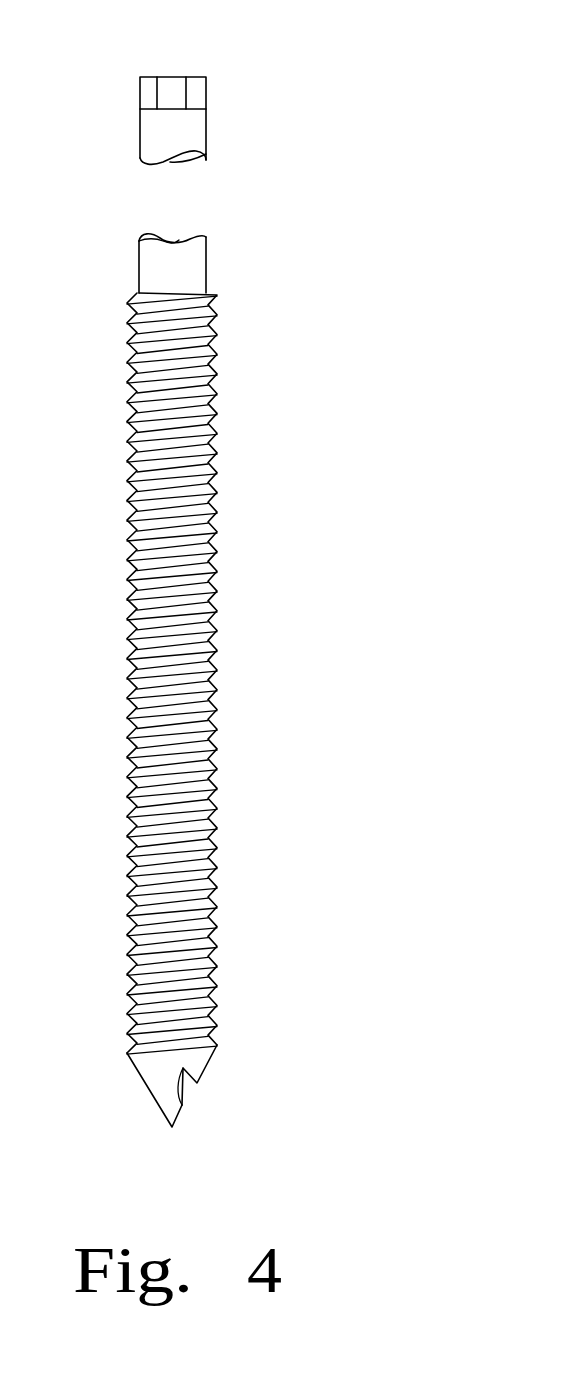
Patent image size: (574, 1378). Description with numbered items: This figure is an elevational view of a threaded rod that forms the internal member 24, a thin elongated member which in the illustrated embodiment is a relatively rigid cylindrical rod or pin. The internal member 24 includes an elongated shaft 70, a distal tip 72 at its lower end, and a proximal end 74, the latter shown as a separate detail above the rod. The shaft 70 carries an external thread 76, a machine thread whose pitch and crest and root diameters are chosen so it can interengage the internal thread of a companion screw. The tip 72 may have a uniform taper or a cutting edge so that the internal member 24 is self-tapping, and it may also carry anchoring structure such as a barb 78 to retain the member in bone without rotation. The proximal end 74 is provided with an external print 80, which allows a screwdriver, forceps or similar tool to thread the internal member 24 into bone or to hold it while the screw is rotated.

The internal member 24 is at (233, 659).
The elongated shaft 70 is at (186, 246).
The distal tip 72 is at (179, 1091).
The proximal end 74 is at (190, 90).
The external thread 76 is at (215, 790).
The barb 78 is at (199, 1081).
The external print 80 is at (171, 92).